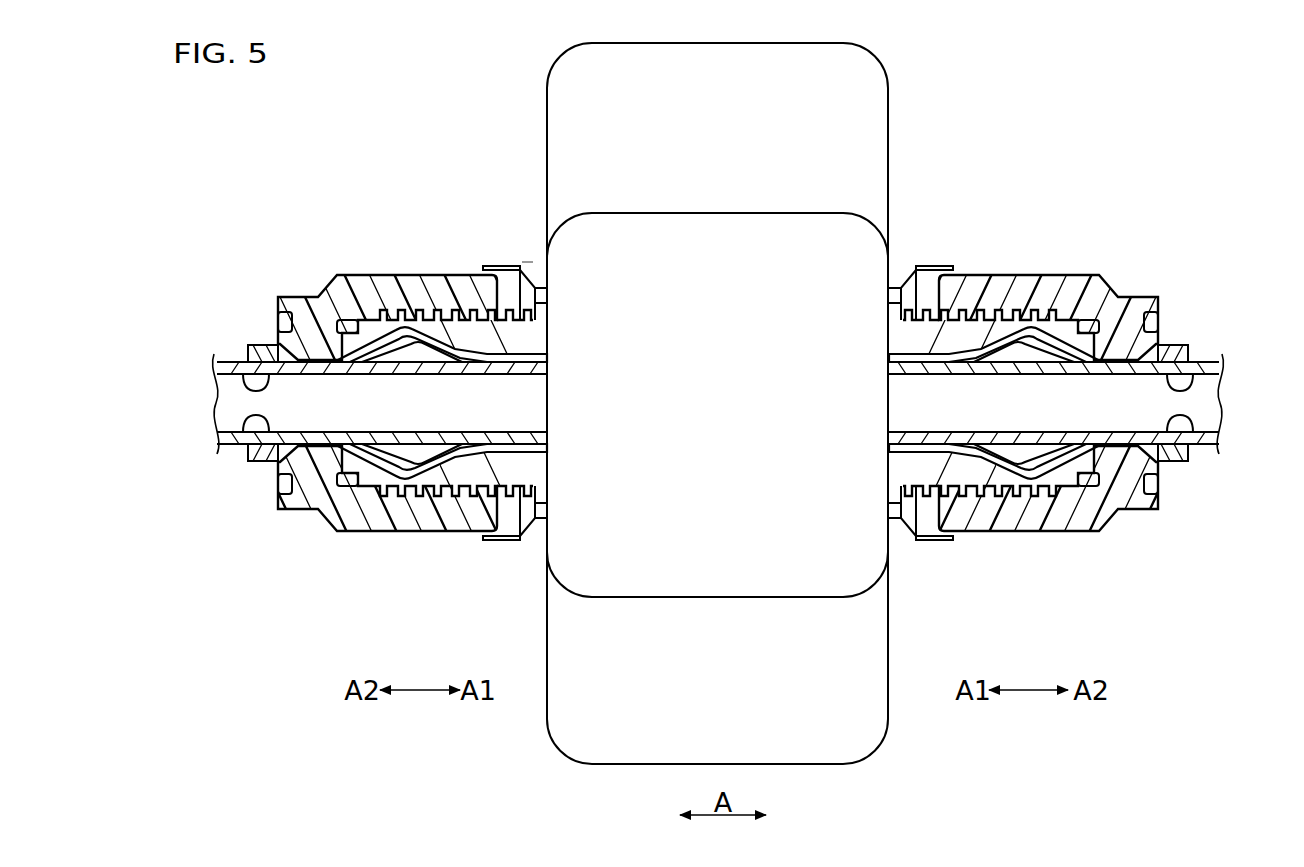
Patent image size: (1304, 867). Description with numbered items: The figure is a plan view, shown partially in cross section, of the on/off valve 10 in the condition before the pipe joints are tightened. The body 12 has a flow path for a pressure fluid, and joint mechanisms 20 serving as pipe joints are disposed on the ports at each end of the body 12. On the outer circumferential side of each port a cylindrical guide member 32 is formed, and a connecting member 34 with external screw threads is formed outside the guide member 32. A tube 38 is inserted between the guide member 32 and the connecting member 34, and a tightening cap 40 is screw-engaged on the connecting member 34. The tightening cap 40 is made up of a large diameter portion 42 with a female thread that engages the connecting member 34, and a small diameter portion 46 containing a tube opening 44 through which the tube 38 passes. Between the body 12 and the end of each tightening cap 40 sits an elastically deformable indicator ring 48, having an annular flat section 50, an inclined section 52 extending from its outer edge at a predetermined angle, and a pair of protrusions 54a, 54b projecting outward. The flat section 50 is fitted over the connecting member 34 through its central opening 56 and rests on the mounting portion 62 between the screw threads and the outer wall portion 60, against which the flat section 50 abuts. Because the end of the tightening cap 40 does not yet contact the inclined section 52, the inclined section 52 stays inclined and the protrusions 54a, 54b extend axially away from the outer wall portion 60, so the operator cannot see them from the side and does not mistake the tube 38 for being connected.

The on/off valve 10 is at (406, 58).
The body 12 is at (895, 108).
The joint mechanism 20 is at (312, 282).
The guide member 32 is at (417, 363).
The connecting member 34 is at (450, 496).
The tube 38 is at (240, 408).
The tightening cap 40 is at (326, 526).
The large diameter portion 42 is at (387, 290).
The tube opening 44 is at (250, 360).
The small diameter portion 46 is at (256, 455).
The indicator ring 48 is at (512, 248).
The flat section 50 is at (538, 292).
The inclined section 52 is at (523, 268).
The protrusion 54a is at (488, 265).
The protrusion 54b is at (490, 542).
The opening 56 is at (537, 460).
The outer wall portion 60 is at (538, 512).
The mounting portion 62 is at (537, 347).